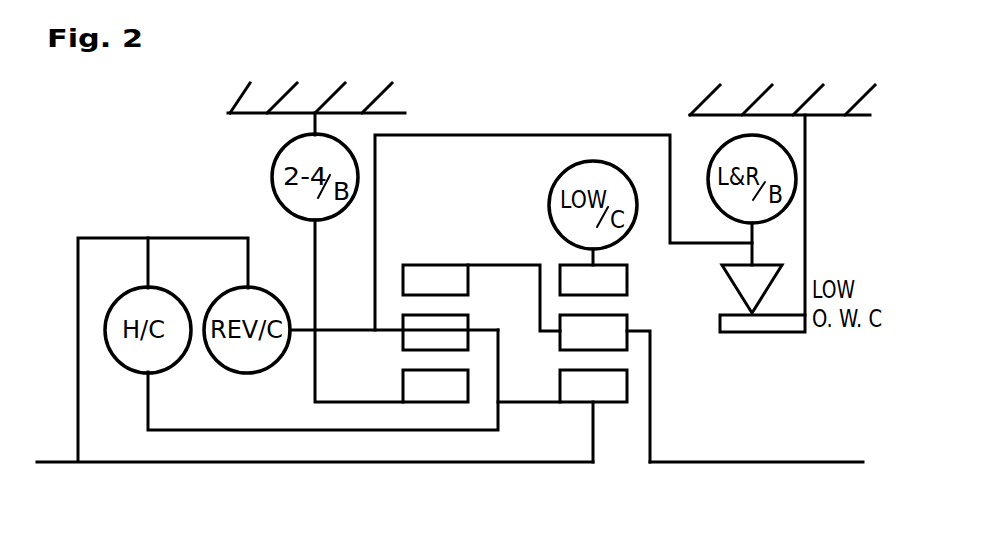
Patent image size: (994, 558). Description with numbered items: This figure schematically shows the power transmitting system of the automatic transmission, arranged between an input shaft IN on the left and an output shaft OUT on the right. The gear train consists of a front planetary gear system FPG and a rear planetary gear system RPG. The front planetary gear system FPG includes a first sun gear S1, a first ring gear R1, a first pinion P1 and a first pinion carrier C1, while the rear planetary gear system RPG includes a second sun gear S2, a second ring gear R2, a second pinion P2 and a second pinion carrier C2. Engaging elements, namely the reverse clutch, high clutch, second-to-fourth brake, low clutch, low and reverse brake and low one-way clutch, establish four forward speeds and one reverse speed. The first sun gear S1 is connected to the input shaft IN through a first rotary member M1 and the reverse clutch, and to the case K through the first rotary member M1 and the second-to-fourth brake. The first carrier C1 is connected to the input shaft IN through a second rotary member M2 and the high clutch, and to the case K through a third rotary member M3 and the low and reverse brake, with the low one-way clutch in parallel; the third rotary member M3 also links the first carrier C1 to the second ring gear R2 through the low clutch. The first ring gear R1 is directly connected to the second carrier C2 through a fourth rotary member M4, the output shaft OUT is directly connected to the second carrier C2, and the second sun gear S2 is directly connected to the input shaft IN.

The case K is at (383, 113).
The first rotary member M1 is at (359, 312).
The second rotary member M2 is at (323, 380).
The third rotary member M3 is at (563, 232).
The fourth rotary member M4 is at (514, 285).
The first ring gear R1 is at (435, 280).
The first pinion P1 is at (460, 313).
The first sun gear S1 is at (435, 386).
The first pinion carrier C1 is at (485, 332).
The second ring gear R2 is at (593, 280).
The second pinion P2 is at (615, 313).
The second sun gear S2 is at (593, 416).
The second pinion carrier C2 is at (643, 331).
The front planetary gear system FPG is at (460, 401).
The rear planetary gear system RPG is at (622, 401).
The input shaft IN is at (315, 446).
The output shaft OUT is at (756, 448).